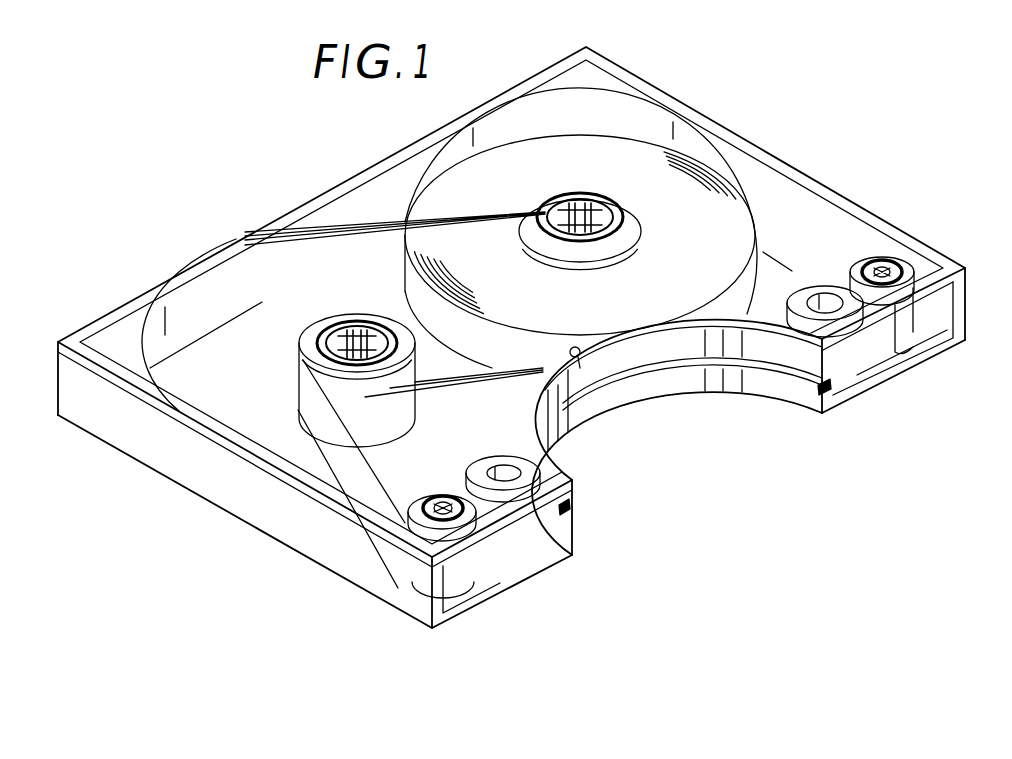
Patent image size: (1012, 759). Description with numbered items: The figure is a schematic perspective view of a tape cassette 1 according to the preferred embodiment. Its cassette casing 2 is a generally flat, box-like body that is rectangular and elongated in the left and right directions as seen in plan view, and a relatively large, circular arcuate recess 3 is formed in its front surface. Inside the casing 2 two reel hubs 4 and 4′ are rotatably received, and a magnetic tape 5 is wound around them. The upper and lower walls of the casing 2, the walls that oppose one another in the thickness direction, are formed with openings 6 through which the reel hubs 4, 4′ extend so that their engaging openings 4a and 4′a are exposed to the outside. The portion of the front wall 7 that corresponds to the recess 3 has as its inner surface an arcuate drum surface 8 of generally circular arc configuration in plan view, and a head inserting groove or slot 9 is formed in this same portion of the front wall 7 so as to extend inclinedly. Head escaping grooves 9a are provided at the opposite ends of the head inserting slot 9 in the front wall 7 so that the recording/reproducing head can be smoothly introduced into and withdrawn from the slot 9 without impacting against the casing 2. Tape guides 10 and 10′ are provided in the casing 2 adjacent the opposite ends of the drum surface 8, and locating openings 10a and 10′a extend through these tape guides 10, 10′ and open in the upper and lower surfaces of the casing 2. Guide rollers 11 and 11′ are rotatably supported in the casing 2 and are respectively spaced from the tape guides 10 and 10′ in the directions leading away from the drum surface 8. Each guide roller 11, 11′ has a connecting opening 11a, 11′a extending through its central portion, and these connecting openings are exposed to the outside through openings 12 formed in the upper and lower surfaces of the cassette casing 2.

The tape cassette 1 is at (206, 206).
The cassette casing 2 is at (712, 118).
The circular arcuate recess 3 is at (762, 395).
The reel hub 4 is at (550, 220).
The engaging opening 4a is at (620, 209).
The reel hub 4′ is at (332, 337).
The engaging opening 4′a is at (300, 360).
The magnetic tape 5 is at (330, 443).
The opening 6 is at (566, 206).
The front wall 7 is at (880, 370).
The arcuate drum surface 8 is at (580, 368).
The head inserting slot 9 is at (655, 366).
The head escaping groove 9a is at (826, 410).
The tape guide 10 is at (790, 296).
The locating opening 10a is at (827, 295).
The tape guide 10′ is at (490, 458).
The locating opening 10′a is at (507, 480).
The guide roller 11 is at (925, 264).
The connecting opening 11a is at (895, 260).
The guide roller 11′ is at (462, 520).
The connecting opening 11′a is at (445, 520).
The opening 12 is at (880, 255).